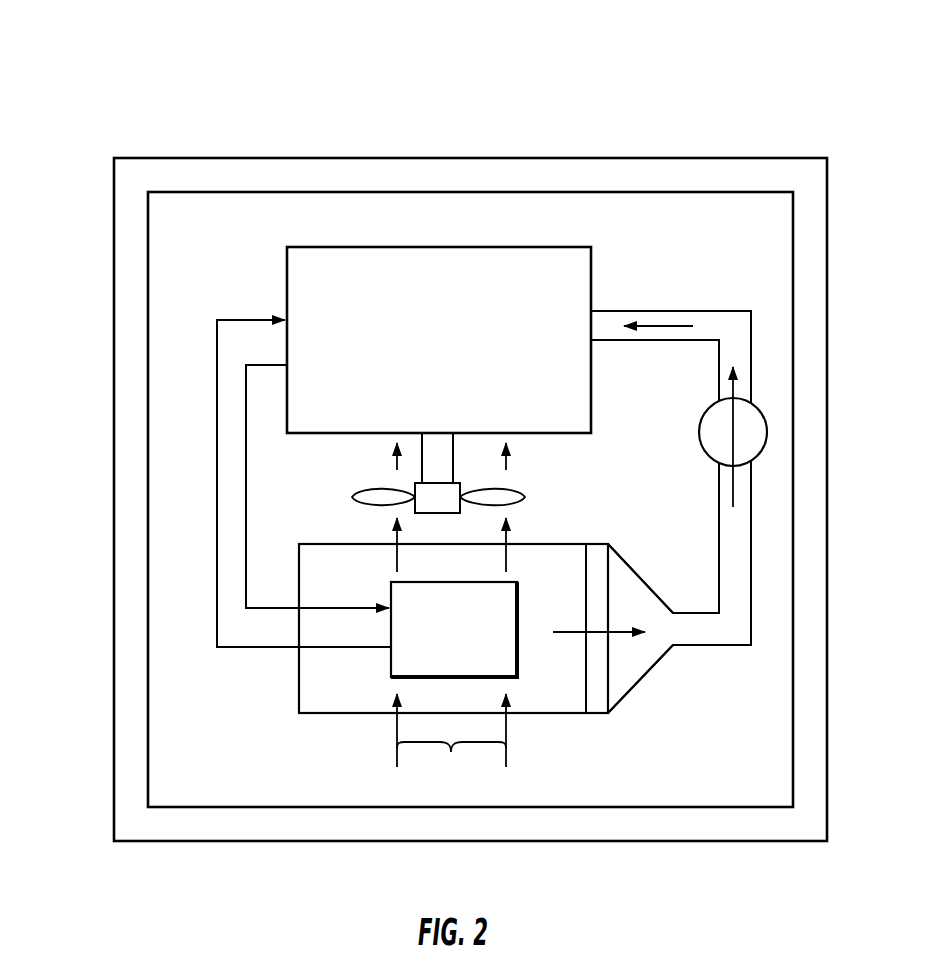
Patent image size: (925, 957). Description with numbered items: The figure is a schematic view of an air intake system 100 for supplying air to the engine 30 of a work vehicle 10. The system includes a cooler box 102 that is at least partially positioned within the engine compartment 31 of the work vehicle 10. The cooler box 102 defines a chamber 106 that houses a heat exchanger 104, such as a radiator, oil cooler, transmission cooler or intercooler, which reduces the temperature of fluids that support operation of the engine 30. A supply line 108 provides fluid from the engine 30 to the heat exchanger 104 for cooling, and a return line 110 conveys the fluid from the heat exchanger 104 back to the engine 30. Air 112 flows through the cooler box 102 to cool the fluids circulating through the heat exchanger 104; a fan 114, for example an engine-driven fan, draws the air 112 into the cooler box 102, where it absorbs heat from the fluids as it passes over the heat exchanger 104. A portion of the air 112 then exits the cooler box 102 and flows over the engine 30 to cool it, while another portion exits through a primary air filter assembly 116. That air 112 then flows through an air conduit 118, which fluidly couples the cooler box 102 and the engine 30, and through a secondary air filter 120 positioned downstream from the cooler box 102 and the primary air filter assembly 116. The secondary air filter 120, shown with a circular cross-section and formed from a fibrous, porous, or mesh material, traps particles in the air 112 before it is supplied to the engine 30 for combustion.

The air intake system 100 is at (96, 88).
The work vehicle 10 is at (652, 841).
The engine compartment 31 is at (202, 807).
The engine 30 is at (425, 355).
The cooler box 102 is at (342, 713).
The heat exchanger 104 is at (435, 640).
The chamber 106 is at (532, 683).
The supply line 108 is at (246, 558).
The return line 110 is at (217, 493).
The air 112 is at (397, 468).
The fan 114 is at (525, 497).
The primary air filter assembly 116 is at (595, 713).
The air conduit 118 is at (751, 583).
The secondary air filter 120 is at (767, 443).